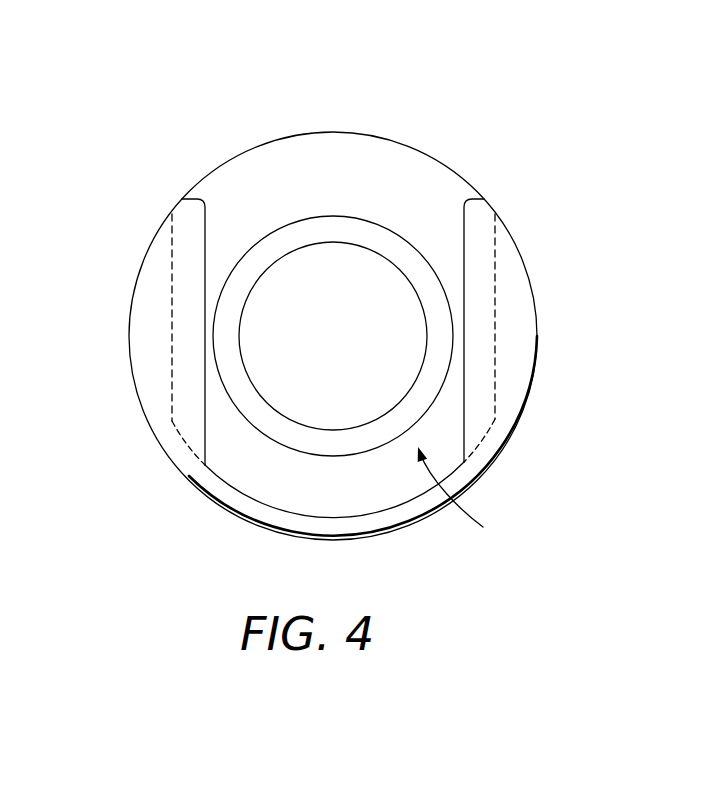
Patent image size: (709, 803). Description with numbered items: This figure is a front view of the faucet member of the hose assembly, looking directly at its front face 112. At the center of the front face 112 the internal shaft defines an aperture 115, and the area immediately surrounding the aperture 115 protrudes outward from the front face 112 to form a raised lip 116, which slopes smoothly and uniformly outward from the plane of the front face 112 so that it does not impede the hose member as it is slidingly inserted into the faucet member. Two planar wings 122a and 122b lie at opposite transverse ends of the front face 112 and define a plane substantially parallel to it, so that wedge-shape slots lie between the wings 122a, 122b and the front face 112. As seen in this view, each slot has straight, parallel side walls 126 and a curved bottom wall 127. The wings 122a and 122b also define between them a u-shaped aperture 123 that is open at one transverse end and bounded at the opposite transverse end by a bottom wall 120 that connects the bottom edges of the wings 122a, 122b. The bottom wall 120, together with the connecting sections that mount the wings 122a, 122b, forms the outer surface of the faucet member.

The front face 112 is at (364, 152).
The aperture 115 is at (302, 278).
The raised lip 116 is at (283, 428).
The bottom wall 120 is at (335, 532).
The planar wing 122a is at (188, 231).
The planar wing 122b is at (478, 235).
The side walls 126 is at (172, 292).
The curved bottom wall 127 is at (185, 435).
The u-shaped aperture 123 is at (473, 500).